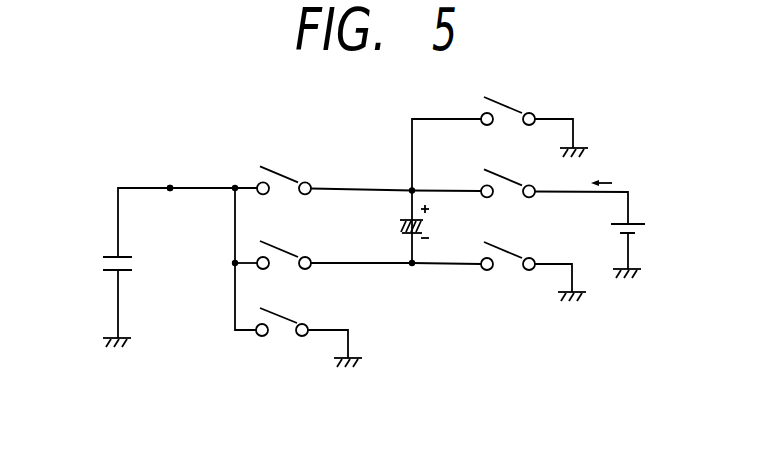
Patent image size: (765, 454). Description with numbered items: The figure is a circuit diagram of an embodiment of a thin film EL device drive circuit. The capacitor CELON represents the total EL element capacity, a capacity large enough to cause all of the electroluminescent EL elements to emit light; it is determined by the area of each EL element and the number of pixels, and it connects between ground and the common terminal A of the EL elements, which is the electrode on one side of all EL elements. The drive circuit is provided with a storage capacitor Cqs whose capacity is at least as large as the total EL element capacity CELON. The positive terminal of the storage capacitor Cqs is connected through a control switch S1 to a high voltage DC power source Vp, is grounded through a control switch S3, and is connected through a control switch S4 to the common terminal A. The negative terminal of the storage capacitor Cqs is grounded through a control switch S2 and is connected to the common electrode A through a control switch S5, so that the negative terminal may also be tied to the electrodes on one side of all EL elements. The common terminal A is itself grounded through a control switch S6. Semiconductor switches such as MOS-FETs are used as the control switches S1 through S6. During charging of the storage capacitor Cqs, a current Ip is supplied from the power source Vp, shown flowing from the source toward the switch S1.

The common terminal of the EL elements A is at (170, 200).
The total EL element capacity CELON is at (87, 276).
The control switch S1 is at (508, 173).
The control switch S2 is at (508, 247).
The control switch S3 is at (508, 99).
The control switch S4 is at (284, 170).
The control switch S5 is at (284, 242).
The control switch S6 is at (282, 310).
The storage capacitor Cqs is at (392, 227).
The high voltage DC power source Vp is at (642, 223).
The current value Ip is at (615, 169).